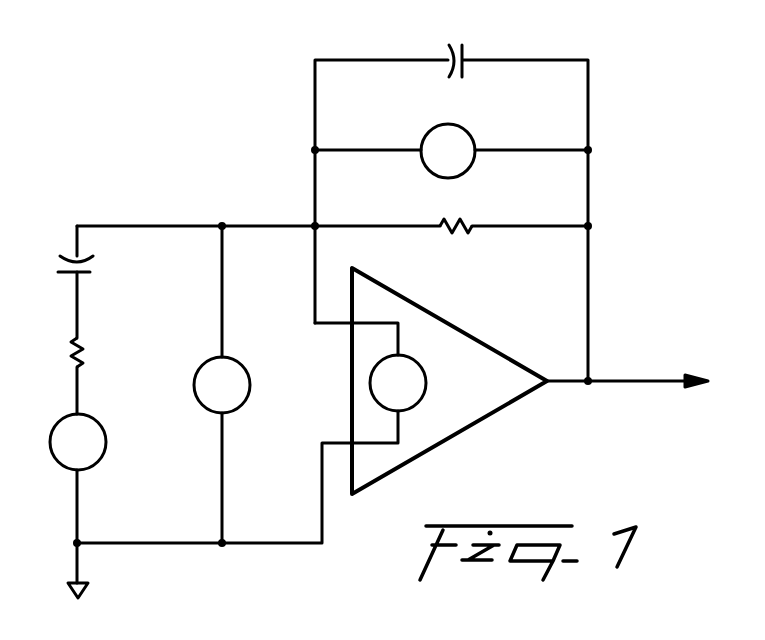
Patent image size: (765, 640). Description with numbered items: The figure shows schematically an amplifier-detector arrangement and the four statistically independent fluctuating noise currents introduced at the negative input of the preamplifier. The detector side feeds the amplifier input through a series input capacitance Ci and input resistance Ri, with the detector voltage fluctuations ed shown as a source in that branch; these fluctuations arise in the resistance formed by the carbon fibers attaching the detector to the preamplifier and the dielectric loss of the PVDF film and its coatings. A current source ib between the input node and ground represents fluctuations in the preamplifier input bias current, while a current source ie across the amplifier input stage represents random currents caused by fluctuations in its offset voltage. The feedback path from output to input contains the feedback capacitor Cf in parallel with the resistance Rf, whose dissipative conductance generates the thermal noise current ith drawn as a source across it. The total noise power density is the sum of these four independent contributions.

The feedback capacitor Cf is at (454, 44).
The thermal noise current ith is at (448, 151).
The feedback resistance Rf is at (456, 243).
The input capacitor Ci is at (62, 266).
The input resistor Ri is at (61, 357).
The detector voltage fluctuations ed is at (78, 442).
The preamplifier input bias current fluctuations ib is at (222, 385).
The random noise currents ie is at (398, 383).